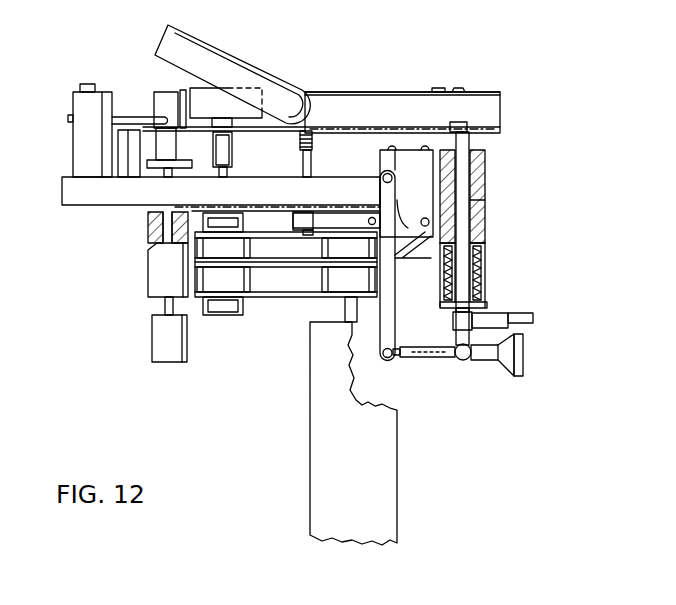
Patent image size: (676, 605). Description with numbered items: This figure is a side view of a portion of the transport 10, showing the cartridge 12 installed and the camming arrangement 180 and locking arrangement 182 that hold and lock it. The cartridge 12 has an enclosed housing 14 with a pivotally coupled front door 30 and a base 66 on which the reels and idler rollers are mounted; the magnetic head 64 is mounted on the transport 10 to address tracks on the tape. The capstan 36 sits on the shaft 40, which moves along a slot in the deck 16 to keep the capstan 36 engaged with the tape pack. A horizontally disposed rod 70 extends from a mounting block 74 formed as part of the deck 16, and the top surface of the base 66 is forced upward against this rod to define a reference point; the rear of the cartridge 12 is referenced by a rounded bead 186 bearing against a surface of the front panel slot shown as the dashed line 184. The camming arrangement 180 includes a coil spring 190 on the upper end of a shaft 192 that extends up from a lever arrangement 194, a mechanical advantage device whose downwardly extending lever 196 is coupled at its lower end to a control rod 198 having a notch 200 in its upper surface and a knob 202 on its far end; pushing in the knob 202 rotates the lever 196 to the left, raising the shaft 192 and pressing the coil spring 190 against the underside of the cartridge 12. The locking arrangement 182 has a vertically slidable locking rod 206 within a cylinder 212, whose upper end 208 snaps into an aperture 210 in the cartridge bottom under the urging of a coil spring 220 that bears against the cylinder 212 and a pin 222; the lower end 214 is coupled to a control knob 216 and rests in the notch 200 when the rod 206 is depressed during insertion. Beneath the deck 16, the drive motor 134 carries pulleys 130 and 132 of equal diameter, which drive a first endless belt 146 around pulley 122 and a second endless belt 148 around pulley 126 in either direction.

The transport 10 is at (100, 268).
The cartridge 12 is at (404, 85).
The enclosed housing 14 is at (498, 104).
The deck 16 is at (82, 200).
The front door 30 is at (238, 72).
The capstan 36 is at (210, 99).
The shaft 40 is at (212, 173).
The magnetic head 64 is at (166, 95).
The base 66 is at (211, 128).
The rod 70 is at (142, 103).
The mounting block 74 is at (83, 136).
The pulley 122 is at (215, 245).
The pulley 126 is at (240, 308).
The pulley 130 is at (318, 258).
The pulley 132 is at (335, 300).
The drive motor 134 is at (390, 468).
The first endless belt 146 is at (279, 217).
The second endless belt 148 is at (268, 290).
The camming arrangement 180 is at (383, 163).
The locking arrangement 182 is at (476, 175).
The surface (dashed line) 184 is at (445, 68).
The rounded bead 186 is at (470, 87).
The coil spring 190 is at (302, 140).
The shaft 192 is at (313, 168).
The lever arrangement 194 is at (414, 197).
The lever 196 is at (391, 286).
The control rod 198 is at (450, 358).
The notch 200 is at (419, 350).
The knob 202 is at (522, 363).
The locking rod 206 is at (483, 264).
The upper end 208 is at (462, 152).
The aperture 210 is at (467, 126).
The cylinder 212 is at (476, 226).
The lower end 214 is at (460, 330).
The control knob 216 is at (533, 315).
The coil spring 220 is at (483, 293).
The pin 222 is at (483, 247).